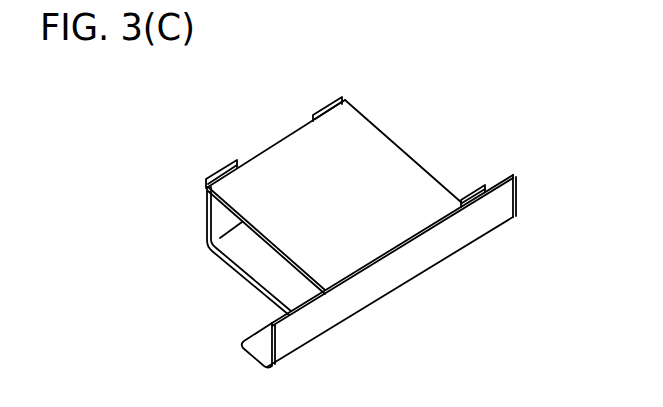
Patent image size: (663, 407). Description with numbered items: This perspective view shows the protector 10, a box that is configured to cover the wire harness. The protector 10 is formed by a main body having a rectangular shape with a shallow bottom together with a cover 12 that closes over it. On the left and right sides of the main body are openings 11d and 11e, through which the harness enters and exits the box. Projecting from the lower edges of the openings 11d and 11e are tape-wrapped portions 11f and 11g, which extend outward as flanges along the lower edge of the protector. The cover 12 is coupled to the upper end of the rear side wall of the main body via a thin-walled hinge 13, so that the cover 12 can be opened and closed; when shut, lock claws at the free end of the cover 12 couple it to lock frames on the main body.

The protector 10 is at (407, 91).
The cover 12 is at (303, 182).
The opening 11d is at (253, 252).
The opening 11e is at (405, 148).
The tape-wrapped portion 11f is at (285, 342).
The tape-wrapped portion 11g is at (497, 204).
The thin-walled hinge 13 is at (392, 248).